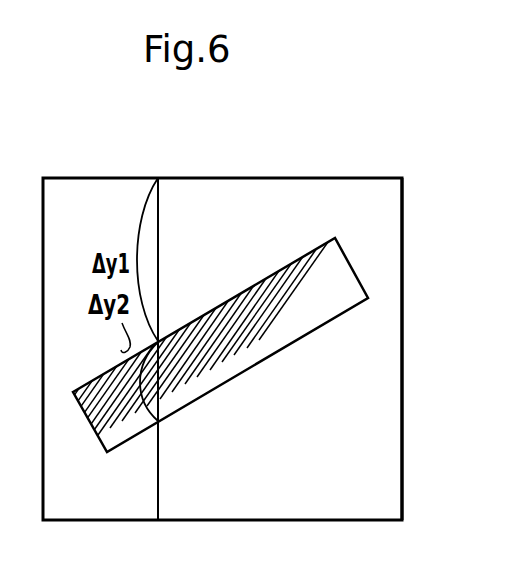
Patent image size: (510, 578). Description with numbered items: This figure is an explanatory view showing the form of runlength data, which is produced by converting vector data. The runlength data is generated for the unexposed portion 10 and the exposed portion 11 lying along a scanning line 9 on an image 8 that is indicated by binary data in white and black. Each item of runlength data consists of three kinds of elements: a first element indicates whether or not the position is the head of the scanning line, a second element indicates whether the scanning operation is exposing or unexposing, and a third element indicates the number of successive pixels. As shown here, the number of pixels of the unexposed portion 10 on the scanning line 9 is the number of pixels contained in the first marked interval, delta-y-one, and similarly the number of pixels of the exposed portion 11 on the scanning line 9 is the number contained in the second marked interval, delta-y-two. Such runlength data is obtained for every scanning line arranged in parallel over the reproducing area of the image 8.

The image 8 is at (308, 178).
The scanning line 9 is at (158, 228).
The unexposed portion 10 is at (402, 228).
The exposed portion 11 is at (295, 327).